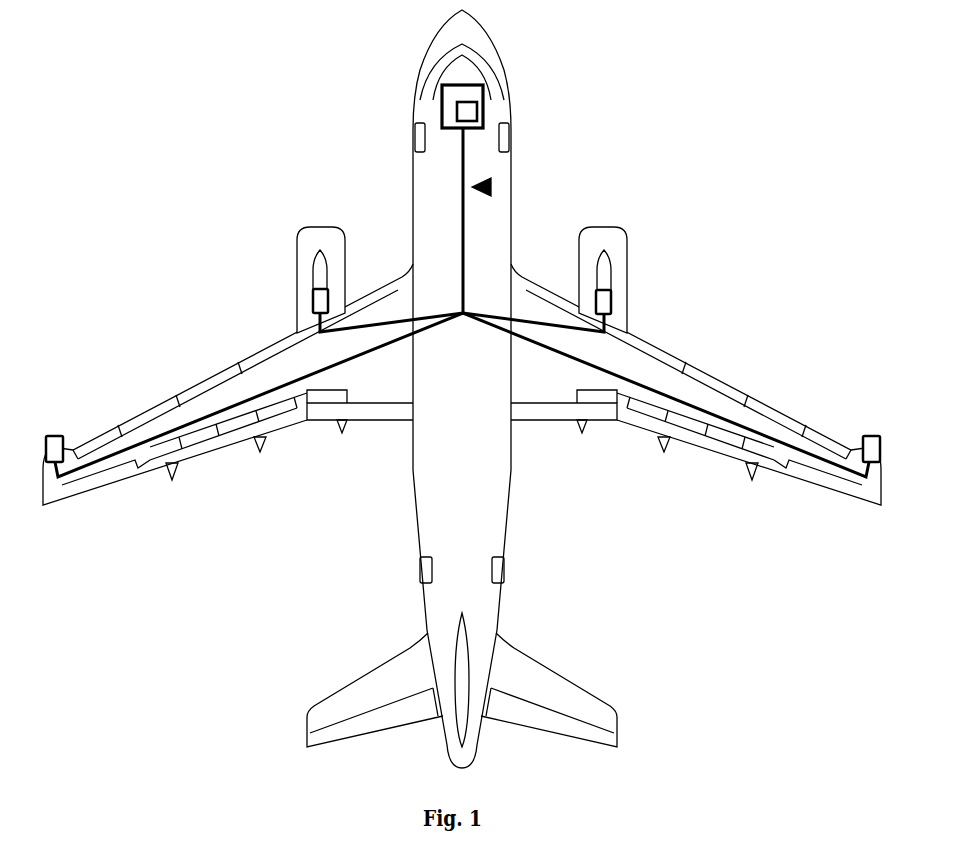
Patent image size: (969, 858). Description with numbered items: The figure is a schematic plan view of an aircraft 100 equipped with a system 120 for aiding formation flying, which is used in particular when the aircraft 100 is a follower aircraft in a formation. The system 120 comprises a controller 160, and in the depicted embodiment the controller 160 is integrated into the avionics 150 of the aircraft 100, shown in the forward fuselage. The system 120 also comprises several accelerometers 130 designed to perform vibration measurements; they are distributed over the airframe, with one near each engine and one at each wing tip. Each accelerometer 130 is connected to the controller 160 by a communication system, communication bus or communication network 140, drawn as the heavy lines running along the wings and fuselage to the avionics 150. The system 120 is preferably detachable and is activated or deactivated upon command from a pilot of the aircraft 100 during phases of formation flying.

The aircraft 100 is at (480, 32).
The system for aiding formation flying 120 is at (491, 185).
The accelerometer 130 is at (313, 299).
The communication network 140 is at (462, 208).
The avionics 150 is at (442, 101).
The controller 160 is at (477, 115).